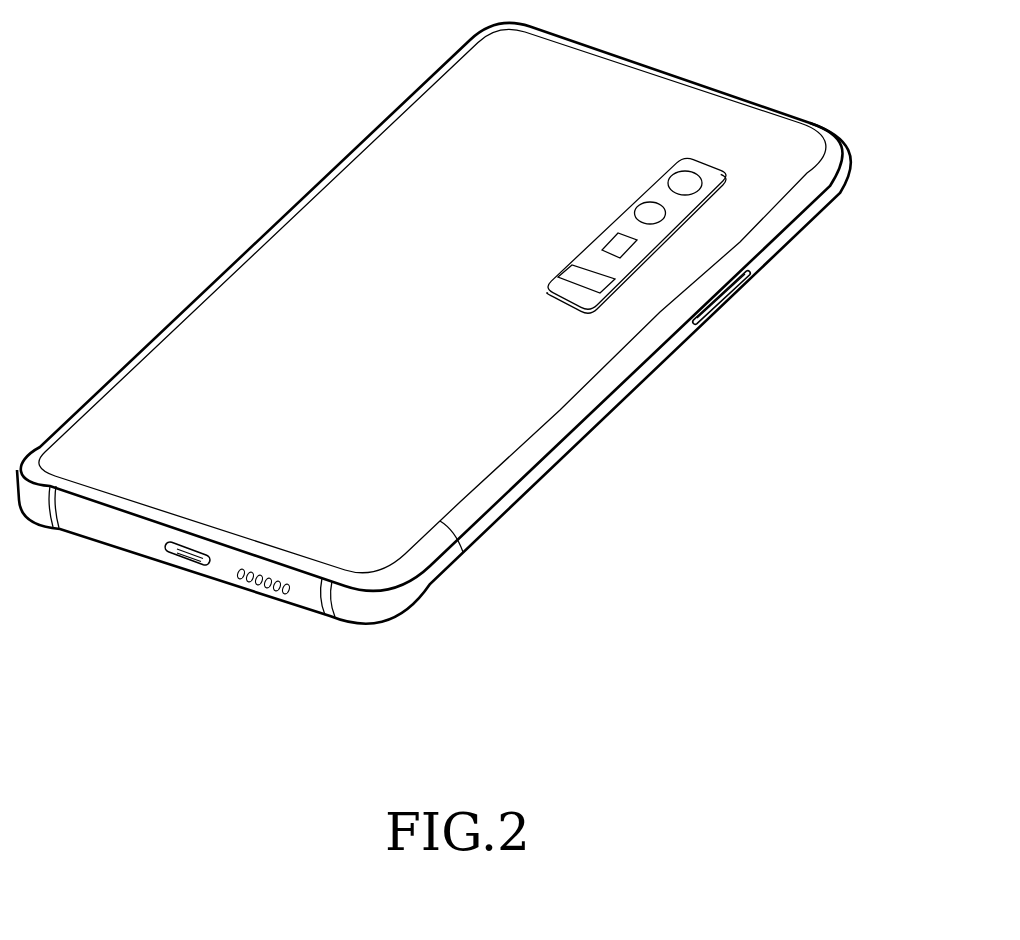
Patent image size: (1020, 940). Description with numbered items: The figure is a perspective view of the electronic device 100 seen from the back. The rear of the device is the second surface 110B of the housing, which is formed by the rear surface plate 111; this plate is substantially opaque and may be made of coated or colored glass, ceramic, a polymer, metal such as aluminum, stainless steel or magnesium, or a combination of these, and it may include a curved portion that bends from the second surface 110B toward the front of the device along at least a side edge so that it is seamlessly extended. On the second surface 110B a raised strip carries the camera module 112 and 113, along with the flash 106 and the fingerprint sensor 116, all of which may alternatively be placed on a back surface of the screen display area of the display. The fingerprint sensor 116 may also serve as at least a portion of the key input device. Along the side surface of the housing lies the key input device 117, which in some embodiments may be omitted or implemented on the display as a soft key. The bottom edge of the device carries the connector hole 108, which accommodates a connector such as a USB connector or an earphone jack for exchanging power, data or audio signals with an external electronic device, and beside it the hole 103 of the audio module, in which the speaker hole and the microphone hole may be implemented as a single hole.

The electronic device 100 is at (295, 96).
The audio module hole 103 is at (260, 587).
The flash 106 is at (618, 247).
The connector hole 108 is at (182, 553).
The second surface 110B is at (250, 288).
The rear surface plate 111 is at (188, 382).
The camera module 112 is at (653, 214).
The camera module 113 is at (690, 181).
The fingerprint sensor 116 is at (592, 280).
The key input device 117 is at (730, 292).